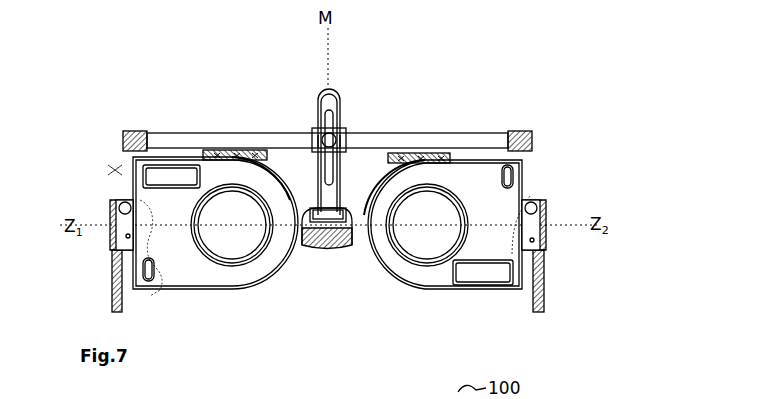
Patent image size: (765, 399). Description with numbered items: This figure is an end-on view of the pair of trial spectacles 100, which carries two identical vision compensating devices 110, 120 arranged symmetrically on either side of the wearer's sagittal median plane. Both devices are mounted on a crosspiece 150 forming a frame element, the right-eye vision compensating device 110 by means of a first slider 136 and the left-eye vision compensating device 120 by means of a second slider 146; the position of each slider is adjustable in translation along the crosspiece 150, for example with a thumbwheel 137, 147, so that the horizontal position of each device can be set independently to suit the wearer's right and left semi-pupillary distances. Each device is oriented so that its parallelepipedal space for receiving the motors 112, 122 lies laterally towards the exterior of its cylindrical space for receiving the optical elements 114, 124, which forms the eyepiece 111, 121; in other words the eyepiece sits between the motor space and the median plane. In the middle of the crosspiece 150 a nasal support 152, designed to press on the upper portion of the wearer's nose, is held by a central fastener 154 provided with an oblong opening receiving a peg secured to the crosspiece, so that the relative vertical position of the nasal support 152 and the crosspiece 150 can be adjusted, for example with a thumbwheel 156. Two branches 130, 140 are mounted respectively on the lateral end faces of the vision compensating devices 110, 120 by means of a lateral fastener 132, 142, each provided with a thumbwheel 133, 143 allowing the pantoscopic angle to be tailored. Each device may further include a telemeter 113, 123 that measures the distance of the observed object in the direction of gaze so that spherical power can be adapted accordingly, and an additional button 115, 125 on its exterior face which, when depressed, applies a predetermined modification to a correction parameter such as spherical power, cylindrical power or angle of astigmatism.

The pair of trial spectacles 100 is at (88, 204).
The vision compensating device 110 is at (250, 289).
The eyepiece 111 is at (232, 246).
The space for receiving the motors 112 is at (176, 264).
The telemeter 113 is at (150, 296).
The space for receiving the optical elements 114 is at (258, 175).
The additional button 115 is at (118, 172).
The vision compensating device 120 is at (378, 275).
The eyepiece 121 is at (428, 246).
The space for receiving the motors 122 is at (482, 190).
The telemeter 123 is at (530, 196).
The space for receiving the optical elements 124 is at (380, 186).
The additional button 125 is at (512, 290).
The branch 130 is at (112, 286).
The lateral fastener 132 is at (110, 243).
The thumbwheel 133 is at (122, 200).
The first slider 136 is at (224, 150).
The thumbwheel 137 is at (140, 131).
The branch 140 is at (545, 274).
The lateral fastener 142 is at (546, 210).
The thumbwheel 143 is at (536, 196).
The second slider 146 is at (418, 152).
The thumbwheel 147 is at (522, 131).
The crosspiece 150 is at (468, 130).
The nasal support 152 is at (306, 248).
The central fastener 154 is at (326, 86).
The thumbwheel 156 is at (316, 138).